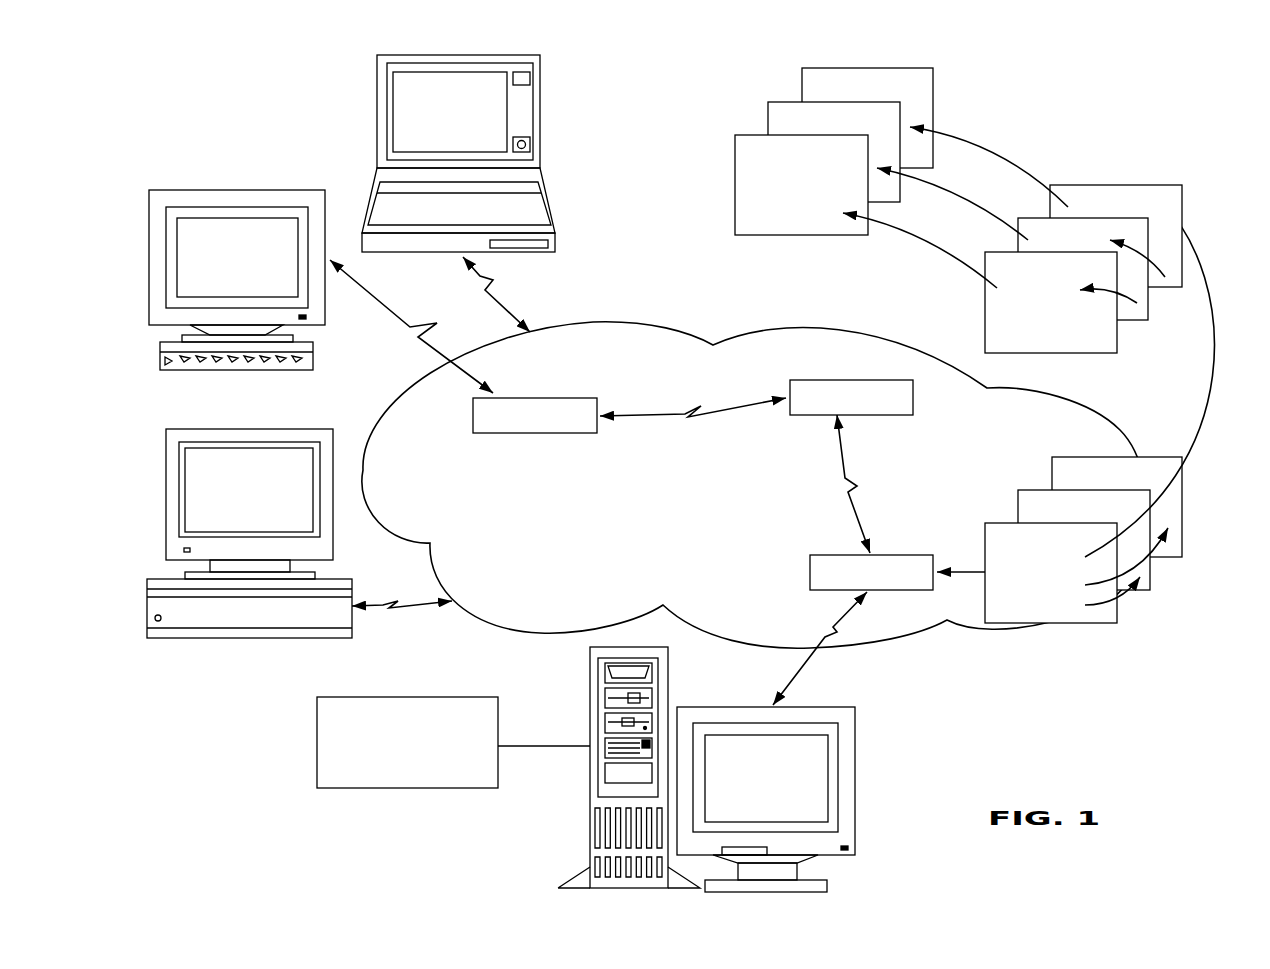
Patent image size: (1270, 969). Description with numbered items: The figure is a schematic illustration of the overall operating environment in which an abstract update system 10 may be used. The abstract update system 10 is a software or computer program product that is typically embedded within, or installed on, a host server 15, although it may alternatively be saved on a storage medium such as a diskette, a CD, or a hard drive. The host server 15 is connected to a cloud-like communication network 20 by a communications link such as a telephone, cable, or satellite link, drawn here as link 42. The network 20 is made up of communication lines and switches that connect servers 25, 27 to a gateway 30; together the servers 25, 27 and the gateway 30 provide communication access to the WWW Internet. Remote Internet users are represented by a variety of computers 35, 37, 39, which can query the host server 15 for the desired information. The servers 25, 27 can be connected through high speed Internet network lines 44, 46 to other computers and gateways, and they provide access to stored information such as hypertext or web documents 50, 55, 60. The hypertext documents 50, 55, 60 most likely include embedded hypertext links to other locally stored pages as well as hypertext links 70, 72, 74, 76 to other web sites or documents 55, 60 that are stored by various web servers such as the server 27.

The abstract update system 10 is at (317, 735).
The host server 15 is at (590, 692).
The communication network 20 is at (652, 325).
The server 25 is at (848, 553).
The server 27 is at (865, 378).
The gateway 30 is at (530, 435).
The computer 35 is at (552, 203).
The computer 37 is at (297, 188).
The computer 39 is at (297, 428).
The communication link 42 is at (788, 687).
The high speed Internet network line 44 is at (863, 520).
The high speed Internet network line 46 is at (680, 407).
The hypertext documents 50 is at (1190, 530).
The hypertext documents 55 is at (1193, 213).
The hypertext documents 60 is at (753, 120).
The hypertext link 70 is at (1213, 377).
The hypertext link 72 is at (1007, 168).
The hypertext link 74 is at (972, 207).
The hypertext link 76 is at (927, 250).